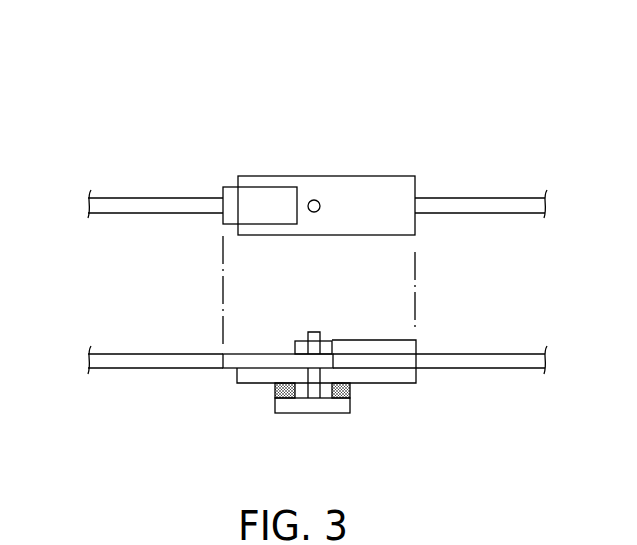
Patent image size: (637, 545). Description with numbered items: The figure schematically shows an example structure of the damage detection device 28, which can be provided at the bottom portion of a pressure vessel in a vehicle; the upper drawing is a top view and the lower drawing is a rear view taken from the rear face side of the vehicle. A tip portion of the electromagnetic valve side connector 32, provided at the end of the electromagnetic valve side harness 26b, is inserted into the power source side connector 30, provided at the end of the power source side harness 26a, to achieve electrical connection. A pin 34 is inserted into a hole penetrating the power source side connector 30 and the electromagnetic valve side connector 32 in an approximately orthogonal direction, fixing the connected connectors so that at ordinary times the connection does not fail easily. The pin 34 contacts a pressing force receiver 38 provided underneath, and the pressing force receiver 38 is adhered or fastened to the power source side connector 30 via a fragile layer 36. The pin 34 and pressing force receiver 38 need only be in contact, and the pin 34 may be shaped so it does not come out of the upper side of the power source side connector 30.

The damage detection device 28 is at (140, 90).
The power source side harness 26a is at (505, 210).
The electromagnetic valve side harness 26b is at (160, 207).
The power source side connector 30 is at (363, 175).
The electromagnetic valve side connector 32 is at (232, 184).
The pin 34 is at (313, 197).
The fragile layer 36 is at (352, 390).
The pressing force receiver 38 is at (317, 413).